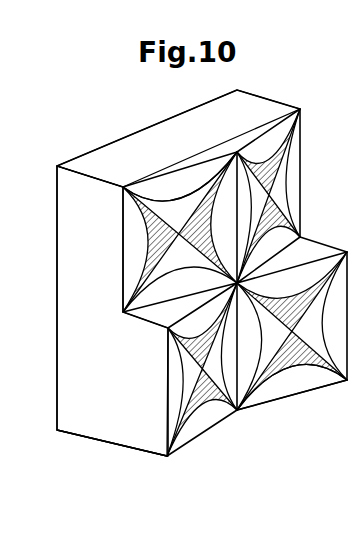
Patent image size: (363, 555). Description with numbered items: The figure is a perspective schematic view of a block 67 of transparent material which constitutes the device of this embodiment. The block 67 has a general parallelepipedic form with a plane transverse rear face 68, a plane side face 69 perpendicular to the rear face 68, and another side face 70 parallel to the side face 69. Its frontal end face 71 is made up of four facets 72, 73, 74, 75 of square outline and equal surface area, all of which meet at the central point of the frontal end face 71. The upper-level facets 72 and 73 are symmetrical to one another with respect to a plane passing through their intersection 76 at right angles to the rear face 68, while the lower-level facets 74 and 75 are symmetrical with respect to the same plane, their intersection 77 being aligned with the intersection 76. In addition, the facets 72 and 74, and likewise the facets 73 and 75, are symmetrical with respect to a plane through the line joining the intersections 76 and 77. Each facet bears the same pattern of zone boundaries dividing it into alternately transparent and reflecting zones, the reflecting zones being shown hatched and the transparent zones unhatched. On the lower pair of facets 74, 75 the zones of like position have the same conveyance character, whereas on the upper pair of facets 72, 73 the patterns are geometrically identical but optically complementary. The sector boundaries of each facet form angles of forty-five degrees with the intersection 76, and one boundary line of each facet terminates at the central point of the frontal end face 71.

The block 67 is at (257, 82).
The rear face 68 is at (57, 288).
The side face 69 is at (103, 420).
The side face 70 is at (283, 102).
The frontal end face 71 is at (330, 398).
The facet 72 is at (165, 183).
The facet 73 is at (296, 178).
The facet 74 is at (207, 423).
The facet 75 is at (308, 273).
The intersection 76 is at (226, 162).
The intersection 77 is at (248, 410).